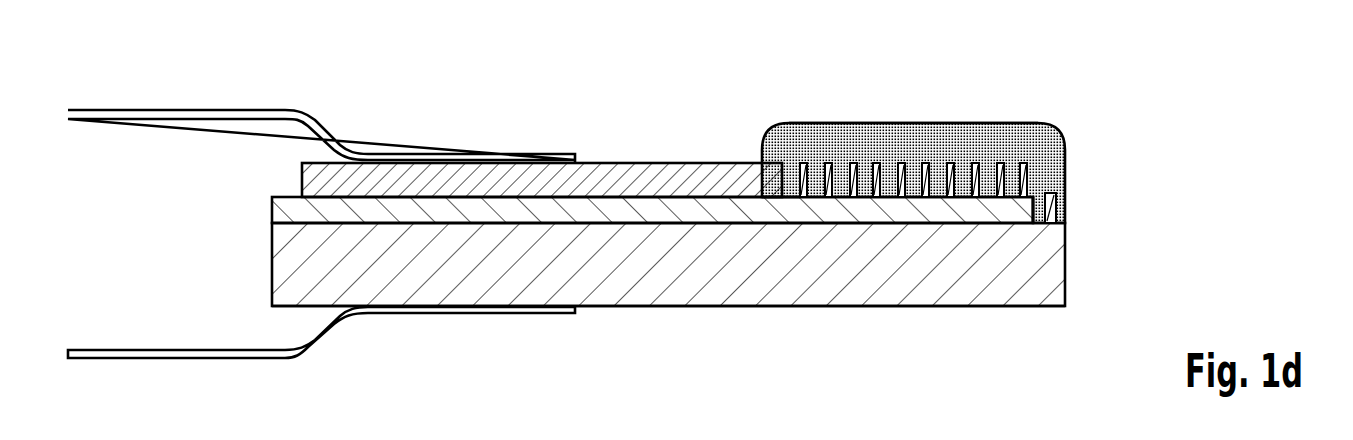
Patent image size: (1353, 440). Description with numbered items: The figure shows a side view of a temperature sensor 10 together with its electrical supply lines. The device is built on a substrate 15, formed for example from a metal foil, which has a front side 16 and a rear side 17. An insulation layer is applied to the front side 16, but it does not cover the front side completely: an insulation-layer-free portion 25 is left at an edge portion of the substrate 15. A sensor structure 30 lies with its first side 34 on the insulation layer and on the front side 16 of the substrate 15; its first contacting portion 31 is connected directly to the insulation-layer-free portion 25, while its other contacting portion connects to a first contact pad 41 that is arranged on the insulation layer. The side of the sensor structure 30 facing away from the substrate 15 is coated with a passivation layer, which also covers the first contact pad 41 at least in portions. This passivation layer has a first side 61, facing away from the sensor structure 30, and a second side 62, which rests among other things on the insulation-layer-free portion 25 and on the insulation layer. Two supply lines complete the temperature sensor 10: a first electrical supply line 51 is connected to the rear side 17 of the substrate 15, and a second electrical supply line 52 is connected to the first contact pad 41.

The temperature sensor 10 is at (1088, 85).
The substrate 15 is at (284, 275).
The front side 16 is at (279, 222).
The rear side 17 is at (962, 307).
The insulation-layer-free portion 25 is at (1065, 215).
The sensor structure 30 is at (993, 150).
The first contacting portion 31 is at (1063, 197).
The first side 34 is at (854, 198).
The first contact pad 41 is at (402, 178).
The first electrical supply line 51 is at (137, 355).
The second electrical supply line 52 is at (137, 115).
The first side 61 is at (811, 124).
The second side 62 is at (789, 198).